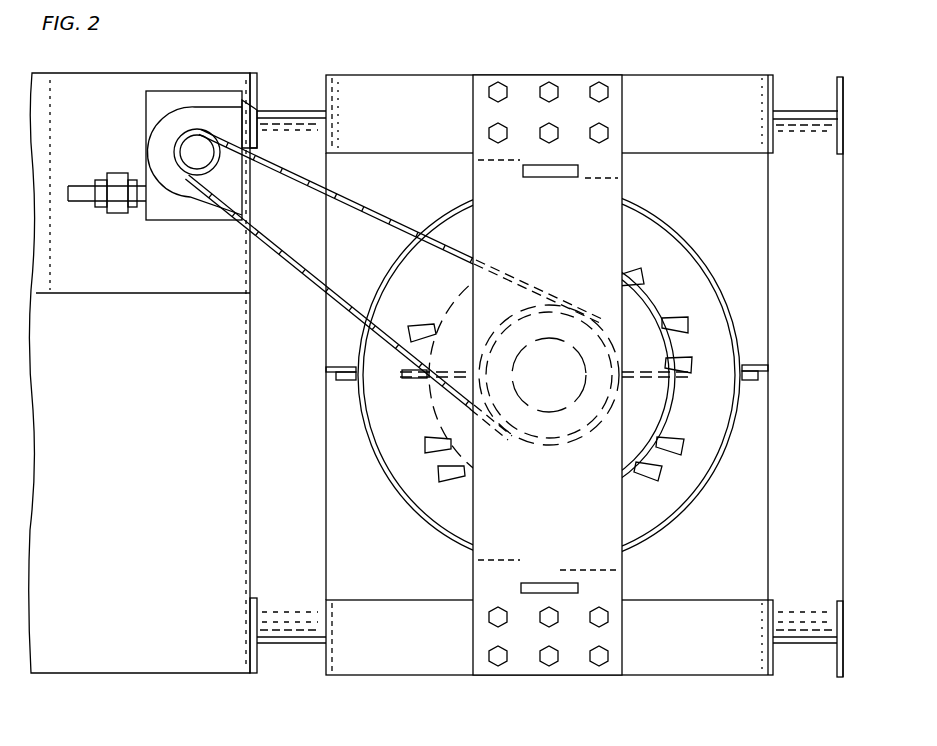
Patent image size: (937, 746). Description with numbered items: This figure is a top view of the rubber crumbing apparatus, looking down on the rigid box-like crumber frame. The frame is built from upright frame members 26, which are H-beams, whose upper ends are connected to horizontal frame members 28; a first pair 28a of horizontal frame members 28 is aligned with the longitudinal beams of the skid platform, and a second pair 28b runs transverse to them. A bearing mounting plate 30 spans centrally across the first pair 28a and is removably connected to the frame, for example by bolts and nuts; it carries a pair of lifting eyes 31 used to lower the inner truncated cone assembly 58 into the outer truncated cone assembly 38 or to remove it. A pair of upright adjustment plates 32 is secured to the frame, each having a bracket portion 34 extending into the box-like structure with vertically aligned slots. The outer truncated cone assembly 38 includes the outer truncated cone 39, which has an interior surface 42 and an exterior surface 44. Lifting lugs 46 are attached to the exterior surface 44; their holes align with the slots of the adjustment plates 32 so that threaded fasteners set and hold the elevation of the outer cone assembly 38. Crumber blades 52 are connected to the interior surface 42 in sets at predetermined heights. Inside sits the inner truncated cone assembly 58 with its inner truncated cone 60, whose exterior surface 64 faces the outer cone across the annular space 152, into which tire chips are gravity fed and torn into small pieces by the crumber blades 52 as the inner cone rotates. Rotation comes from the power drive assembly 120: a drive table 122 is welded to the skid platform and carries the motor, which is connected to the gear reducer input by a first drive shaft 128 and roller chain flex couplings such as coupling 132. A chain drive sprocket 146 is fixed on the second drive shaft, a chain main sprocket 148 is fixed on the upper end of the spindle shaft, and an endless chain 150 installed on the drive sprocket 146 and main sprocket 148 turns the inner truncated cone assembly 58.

The upright frame members 26 is at (288, 110).
The horizontal frame members 28 is at (832, 258).
The first pair of horizontal frame members 28a is at (398, 88).
The second pair of horizontal frame members 28b is at (265, 522).
The bearing mounting plate 30 is at (525, 88).
The lifting eyes 31 is at (516, 180).
The upright adjustment plates 32 is at (345, 367).
The bracket portion 34 is at (332, 382).
The outer truncated cone assembly 38 is at (686, 235).
The outer truncated cone 39 is at (446, 210).
The interior surface 42 is at (684, 282).
The exterior surface 44 is at (672, 533).
The lifting lugs 46 is at (738, 373).
The crumber blades 52 is at (672, 450).
The inner truncated cone assembly 58 is at (632, 282).
The inner truncated cone 60 is at (675, 410).
The exterior surface 64 is at (445, 462).
The power drive assembly 120 is at (130, 146).
The drive table 122 is at (148, 283).
The first drive shaft 128 is at (80, 204).
The roller chain flex coupling 132 is at (118, 216).
The chain drive sprocket 146 is at (218, 165).
The chain main sprocket 148 is at (572, 312).
The endless chain 150 is at (333, 302).
The annular space 152 is at (705, 310).